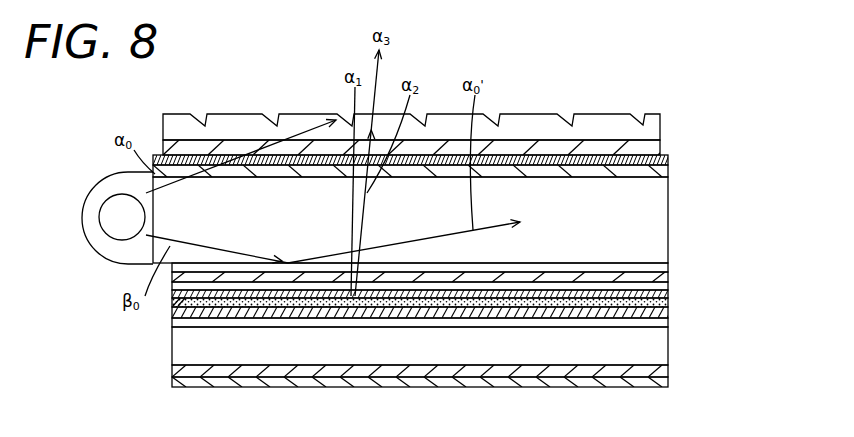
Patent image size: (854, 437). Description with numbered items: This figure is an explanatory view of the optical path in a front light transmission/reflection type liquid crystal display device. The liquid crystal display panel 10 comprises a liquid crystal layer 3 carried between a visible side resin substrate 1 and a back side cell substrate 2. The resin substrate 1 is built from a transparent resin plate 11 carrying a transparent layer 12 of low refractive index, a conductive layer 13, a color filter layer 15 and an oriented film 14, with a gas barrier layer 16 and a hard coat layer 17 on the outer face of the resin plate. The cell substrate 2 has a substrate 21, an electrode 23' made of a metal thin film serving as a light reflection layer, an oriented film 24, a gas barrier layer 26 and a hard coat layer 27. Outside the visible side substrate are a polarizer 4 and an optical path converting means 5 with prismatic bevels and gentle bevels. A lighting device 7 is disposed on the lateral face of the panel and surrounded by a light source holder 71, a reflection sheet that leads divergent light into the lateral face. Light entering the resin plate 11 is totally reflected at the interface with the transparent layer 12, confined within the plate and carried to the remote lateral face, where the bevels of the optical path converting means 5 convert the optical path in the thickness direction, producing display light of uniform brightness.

The optical path converting means 5 is at (660, 118).
The polarizer 4 is at (660, 146).
The hard coat layer 17 is at (668, 160).
The gas barrier layer 16 is at (668, 172).
The transparent resin plate 11 is at (668, 218).
The transparent layer of low refractive index 12 is at (668, 267).
The color filter layer 15 is at (668, 279).
The conductive layer 13 is at (668, 294).
The oriented film 14 is at (668, 303).
The oriented film 24 is at (668, 313).
The electrode 23' is at (455, 333).
The substrate 21 is at (668, 346).
The gas barrier layer 26 is at (668, 371).
The hard coat layer 27 is at (668, 382).
The resin substrate 1 is at (734, 175).
The cell substrate 2 is at (734, 311).
The liquid crystal display panel 10 is at (766, 110).
The liquid crystal layer 3 is at (488, 313).
The lighting device 7 is at (101, 212).
The light source holder 71 is at (110, 173).